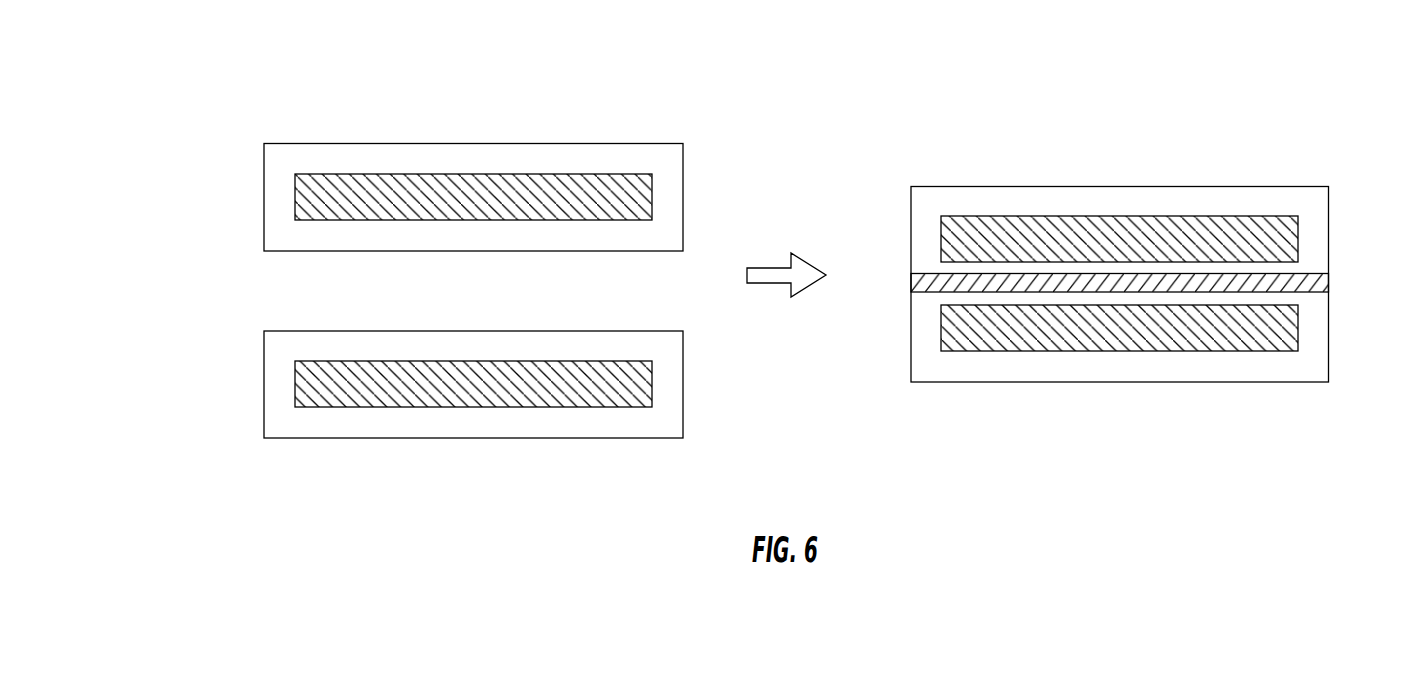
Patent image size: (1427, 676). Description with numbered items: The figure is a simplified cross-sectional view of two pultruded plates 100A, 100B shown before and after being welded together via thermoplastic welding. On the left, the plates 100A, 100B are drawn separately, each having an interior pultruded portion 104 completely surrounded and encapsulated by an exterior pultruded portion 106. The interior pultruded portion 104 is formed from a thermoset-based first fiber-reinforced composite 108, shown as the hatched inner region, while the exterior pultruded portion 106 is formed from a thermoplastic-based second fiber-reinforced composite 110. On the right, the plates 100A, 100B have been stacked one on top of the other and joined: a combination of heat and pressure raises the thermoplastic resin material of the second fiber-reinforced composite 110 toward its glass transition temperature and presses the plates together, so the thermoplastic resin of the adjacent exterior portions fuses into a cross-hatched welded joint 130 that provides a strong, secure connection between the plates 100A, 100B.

The first pultruded plate 100A is at (292, 95).
The second pultruded plate 100B is at (277, 470).
The interior pultruded portion 104 is at (465, 173).
The exterior pultruded portion 106 is at (265, 168).
The first fiber-reinforced composite 108 is at (562, 187).
The second fiber-reinforced composite 110 is at (333, 153).
The welded joint 130 is at (1320, 281).